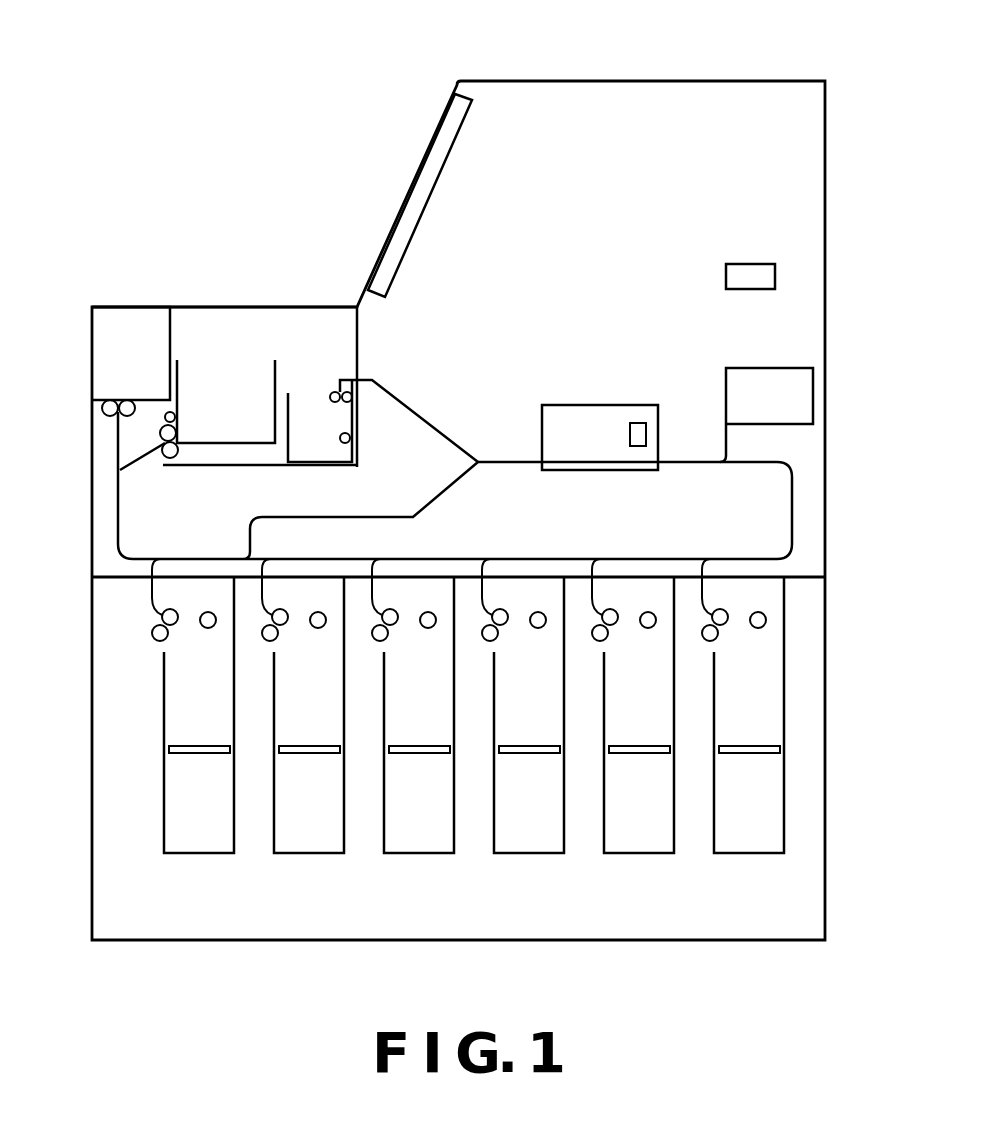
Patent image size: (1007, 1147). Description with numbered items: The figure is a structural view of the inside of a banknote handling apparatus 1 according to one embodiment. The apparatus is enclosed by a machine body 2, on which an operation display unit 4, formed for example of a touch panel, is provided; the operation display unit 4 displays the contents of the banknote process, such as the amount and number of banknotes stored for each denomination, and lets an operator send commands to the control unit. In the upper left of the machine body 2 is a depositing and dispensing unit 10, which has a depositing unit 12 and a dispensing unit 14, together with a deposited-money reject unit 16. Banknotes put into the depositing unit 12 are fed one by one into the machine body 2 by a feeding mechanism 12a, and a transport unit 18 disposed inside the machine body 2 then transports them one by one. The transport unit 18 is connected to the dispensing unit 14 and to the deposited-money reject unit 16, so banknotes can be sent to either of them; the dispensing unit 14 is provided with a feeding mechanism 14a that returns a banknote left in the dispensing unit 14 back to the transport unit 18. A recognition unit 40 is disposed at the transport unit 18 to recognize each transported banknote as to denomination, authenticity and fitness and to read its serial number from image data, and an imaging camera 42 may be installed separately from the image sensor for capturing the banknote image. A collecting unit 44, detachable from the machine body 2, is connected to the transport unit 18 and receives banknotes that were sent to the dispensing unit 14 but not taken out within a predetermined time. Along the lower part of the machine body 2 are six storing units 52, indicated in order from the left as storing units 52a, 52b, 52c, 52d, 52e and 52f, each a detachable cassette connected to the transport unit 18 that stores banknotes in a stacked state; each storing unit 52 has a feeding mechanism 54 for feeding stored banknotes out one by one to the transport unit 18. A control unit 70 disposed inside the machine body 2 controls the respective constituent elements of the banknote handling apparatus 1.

The banknote handling apparatus 1 is at (263, 125).
The machine body 2 is at (610, 80).
The operation display unit 4 is at (422, 180).
The depositing and dispensing unit 10 is at (233, 307).
The depositing unit 12 is at (310, 447).
The feeding mechanism 12a is at (333, 397).
The dispensing unit 14 is at (238, 433).
The feeding mechanism 14a is at (177, 433).
The deposited-money reject unit 16 is at (122, 327).
The transport unit 18 is at (117, 510).
The recognition unit 40 is at (585, 405).
The imaging camera 42 is at (640, 423).
The collecting unit 44 is at (793, 403).
The storing units 52 is at (784, 900).
The storing unit 52a is at (197, 842).
The storing unit 52b is at (307, 842).
The storing unit 52c is at (417, 842).
The storing unit 52d is at (527, 842).
The storing unit 52e is at (637, 842).
The storing unit 52f is at (747, 842).
The feeding mechanism 54 is at (746, 658).
The control unit 70 is at (722, 272).